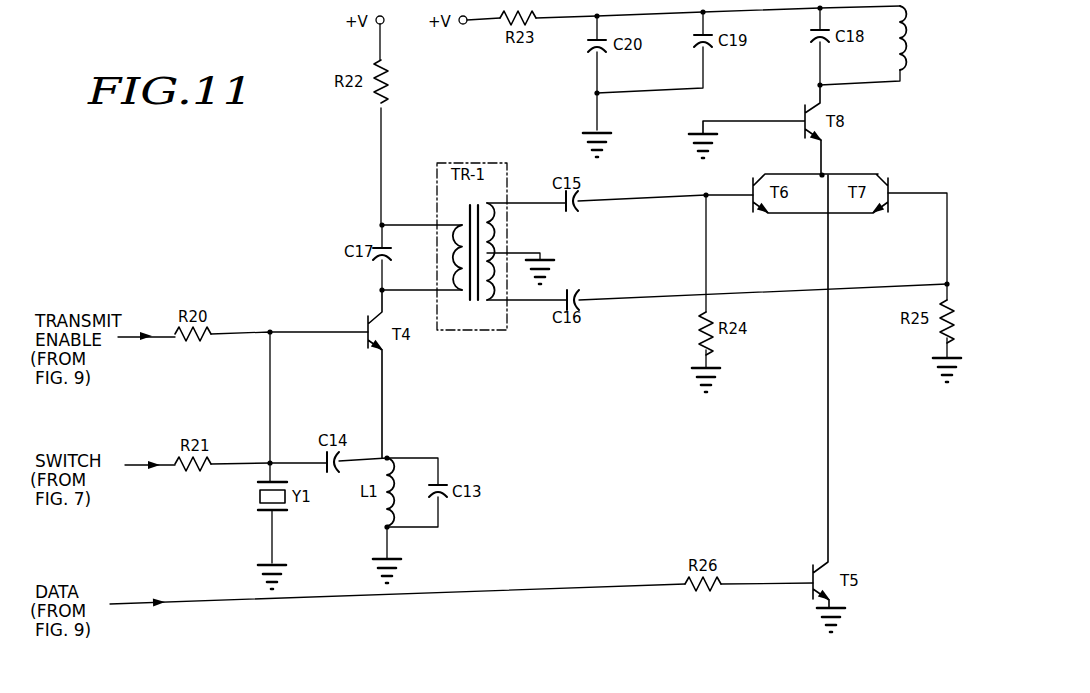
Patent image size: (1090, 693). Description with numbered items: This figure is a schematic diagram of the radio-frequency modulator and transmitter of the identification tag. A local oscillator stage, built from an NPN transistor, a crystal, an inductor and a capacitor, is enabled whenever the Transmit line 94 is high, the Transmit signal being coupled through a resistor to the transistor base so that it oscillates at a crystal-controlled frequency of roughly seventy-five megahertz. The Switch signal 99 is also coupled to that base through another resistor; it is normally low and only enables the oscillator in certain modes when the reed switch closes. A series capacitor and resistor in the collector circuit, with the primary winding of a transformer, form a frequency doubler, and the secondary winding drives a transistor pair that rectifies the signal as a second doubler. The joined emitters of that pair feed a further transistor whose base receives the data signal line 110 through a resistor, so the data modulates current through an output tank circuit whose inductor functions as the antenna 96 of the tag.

The Transmit line 94 is at (148, 340).
The antenna 96 is at (912, 70).
The Switch signal 99 is at (162, 469).
The data signal line 110 is at (168, 606).